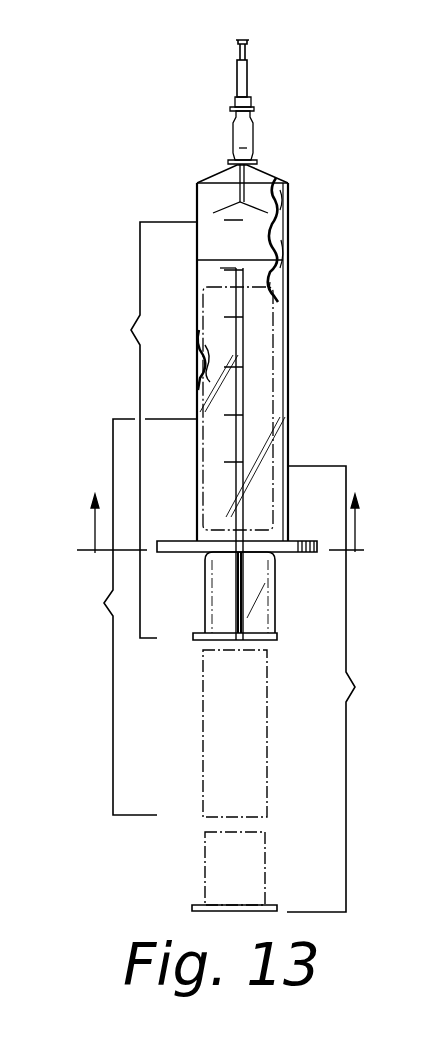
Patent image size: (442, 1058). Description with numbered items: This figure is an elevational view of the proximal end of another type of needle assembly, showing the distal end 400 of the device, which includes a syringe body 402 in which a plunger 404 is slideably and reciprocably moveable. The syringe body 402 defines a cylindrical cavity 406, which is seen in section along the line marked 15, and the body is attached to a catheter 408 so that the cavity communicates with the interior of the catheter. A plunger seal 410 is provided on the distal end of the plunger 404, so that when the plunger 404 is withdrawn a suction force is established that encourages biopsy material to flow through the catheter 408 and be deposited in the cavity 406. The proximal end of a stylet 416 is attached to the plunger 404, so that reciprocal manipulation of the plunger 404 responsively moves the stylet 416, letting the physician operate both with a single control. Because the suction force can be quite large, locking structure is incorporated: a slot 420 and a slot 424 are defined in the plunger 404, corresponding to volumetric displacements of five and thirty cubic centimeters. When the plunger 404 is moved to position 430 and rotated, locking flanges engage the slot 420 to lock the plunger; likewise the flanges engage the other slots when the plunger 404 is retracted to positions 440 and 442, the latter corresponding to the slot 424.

The distal end 400 is at (428, 183).
The syringe body 402 is at (289, 356).
The plunger 404 is at (220, 578).
The cylindrical cavity 406 is at (277, 183).
The catheter 408 is at (243, 78).
The plunger seal 410 is at (278, 217).
The stylet 416 is at (238, 45).
The slot 420 is at (243, 545).
The slot 424 is at (270, 282).
The plunger position 430 is at (138, 430).
The plunger position 440 is at (123, 617).
The plunger position 442 is at (186, 362).
The section line 15- 15 is at (229, 506).